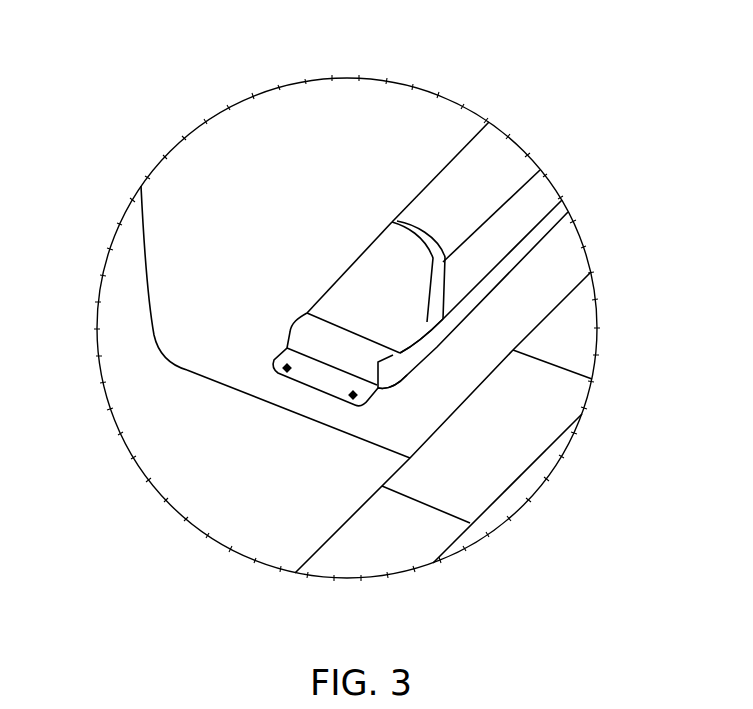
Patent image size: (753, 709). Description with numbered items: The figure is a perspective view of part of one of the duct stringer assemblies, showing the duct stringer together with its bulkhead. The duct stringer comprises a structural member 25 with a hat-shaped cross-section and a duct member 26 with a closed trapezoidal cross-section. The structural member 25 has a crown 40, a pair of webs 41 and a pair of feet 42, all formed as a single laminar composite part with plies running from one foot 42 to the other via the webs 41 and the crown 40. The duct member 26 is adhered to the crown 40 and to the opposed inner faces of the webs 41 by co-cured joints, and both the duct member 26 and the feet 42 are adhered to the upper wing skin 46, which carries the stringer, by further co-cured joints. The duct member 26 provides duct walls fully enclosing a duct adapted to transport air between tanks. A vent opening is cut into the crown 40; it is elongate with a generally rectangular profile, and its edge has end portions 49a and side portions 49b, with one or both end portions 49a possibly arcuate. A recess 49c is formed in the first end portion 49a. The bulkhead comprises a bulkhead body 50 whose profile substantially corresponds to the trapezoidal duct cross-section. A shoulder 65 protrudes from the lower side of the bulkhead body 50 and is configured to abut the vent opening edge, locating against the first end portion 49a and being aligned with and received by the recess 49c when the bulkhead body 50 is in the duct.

The structural member 25 is at (360, 107).
The duct member 26 is at (538, 199).
The crown 40 is at (227, 505).
The webs 41 is at (130, 255).
The feet 42 is at (580, 313).
The upper wing skin 46 is at (540, 467).
The end portions 49a is at (378, 389).
The side portions 49b is at (330, 286).
The recess 49c is at (304, 388).
The bulkhead body 50 is at (392, 315).
The shoulder 65 is at (331, 383).